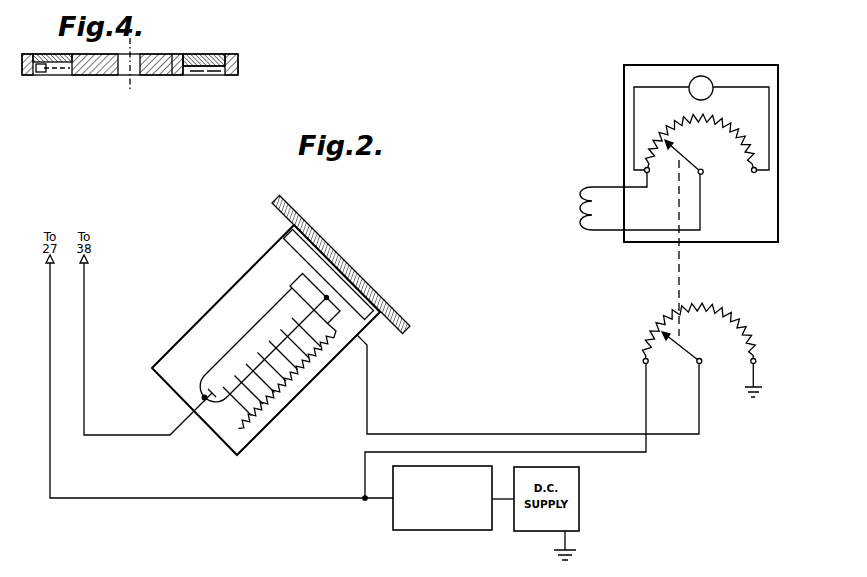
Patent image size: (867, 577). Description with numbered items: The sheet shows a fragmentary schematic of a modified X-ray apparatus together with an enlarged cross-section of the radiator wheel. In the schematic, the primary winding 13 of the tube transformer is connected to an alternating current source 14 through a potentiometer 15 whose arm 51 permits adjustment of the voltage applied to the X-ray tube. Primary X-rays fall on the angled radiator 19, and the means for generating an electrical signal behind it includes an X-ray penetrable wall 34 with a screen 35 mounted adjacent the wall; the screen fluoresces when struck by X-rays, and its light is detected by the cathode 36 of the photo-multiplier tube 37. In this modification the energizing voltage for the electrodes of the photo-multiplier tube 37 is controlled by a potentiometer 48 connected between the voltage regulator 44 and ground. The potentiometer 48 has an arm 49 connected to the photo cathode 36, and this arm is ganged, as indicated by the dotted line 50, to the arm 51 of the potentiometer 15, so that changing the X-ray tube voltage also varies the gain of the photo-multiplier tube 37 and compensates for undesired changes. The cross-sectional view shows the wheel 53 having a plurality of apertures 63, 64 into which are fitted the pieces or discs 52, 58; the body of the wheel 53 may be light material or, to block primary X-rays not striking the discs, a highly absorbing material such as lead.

In FIG. 2, the primary winding 13 is at (591, 186).
In FIG. 2, the alternating current source 14 is at (713, 84).
In FIG. 2, the potentiometer 15 is at (748, 113).
In FIG. 2, the radiator 19 is at (270, 196).
In FIG. 2, the X-ray penetrable wall 34 is at (383, 320).
In FIG. 2, the screen 35 is at (284, 237).
In FIG. 2, the cathode 36 is at (300, 278).
In FIG. 2, the photo-multiplier tube 37 is at (262, 322).
In FIG. 2, the voltage regulator 44 is at (438, 532).
In FIG. 2, the potentiometer 48 is at (648, 326).
In FIG. 2, the arm 49 is at (697, 352).
In FIG. 2, the dotted line 50 is at (679, 287).
In FIG. 2, the arm 51 is at (679, 153).
In FIG. 4, the disc 52 is at (228, 56).
In FIG. 4, the wheel 53 is at (170, 54).
In FIG. 4, the disc 58 is at (42, 55).
In FIG. 4, the aperture 63 is at (214, 77).
In FIG. 4, the aperture 64 is at (57, 76).